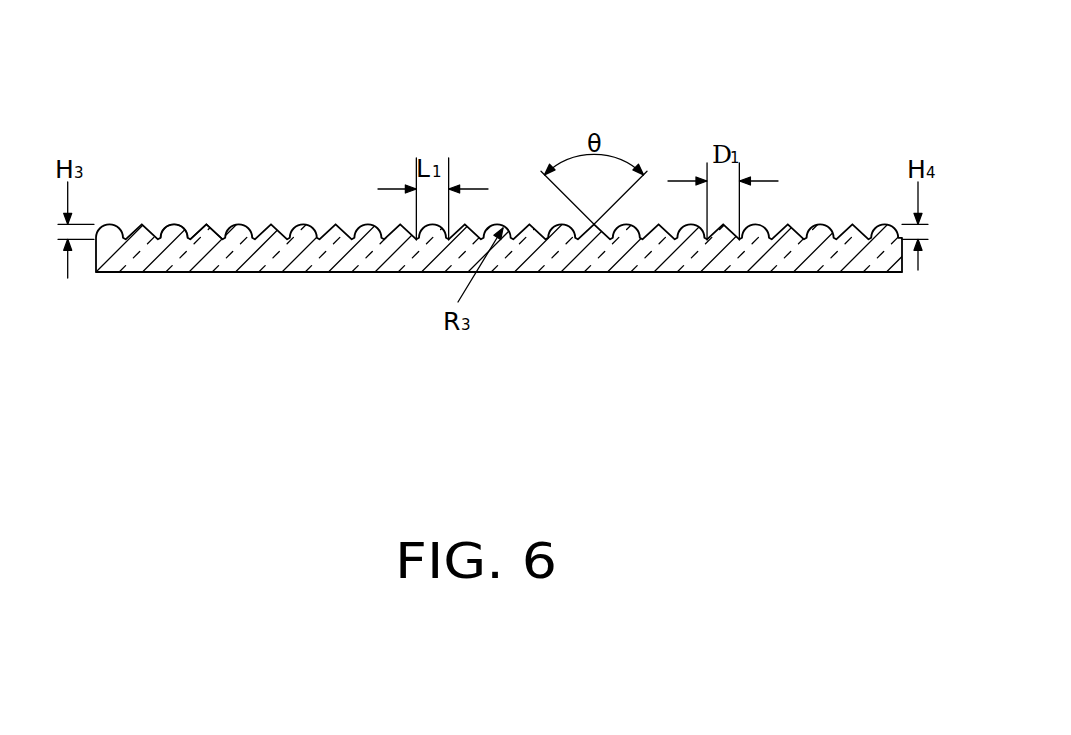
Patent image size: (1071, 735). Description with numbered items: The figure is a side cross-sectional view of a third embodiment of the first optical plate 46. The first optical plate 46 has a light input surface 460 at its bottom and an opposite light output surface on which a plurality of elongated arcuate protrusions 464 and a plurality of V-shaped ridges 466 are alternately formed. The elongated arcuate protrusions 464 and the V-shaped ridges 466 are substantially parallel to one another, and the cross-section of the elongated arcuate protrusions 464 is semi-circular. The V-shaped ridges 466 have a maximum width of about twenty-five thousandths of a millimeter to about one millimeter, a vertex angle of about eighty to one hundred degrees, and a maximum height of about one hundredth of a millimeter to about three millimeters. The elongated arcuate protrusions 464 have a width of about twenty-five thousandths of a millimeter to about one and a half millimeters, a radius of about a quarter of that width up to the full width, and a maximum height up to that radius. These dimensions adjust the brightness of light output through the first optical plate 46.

The first optical plate 46 is at (663, 82).
The light input surface 460 is at (730, 272).
The elongated arcuate protrusions 464 is at (173, 226).
The V-shaped ridges 466 is at (212, 228).